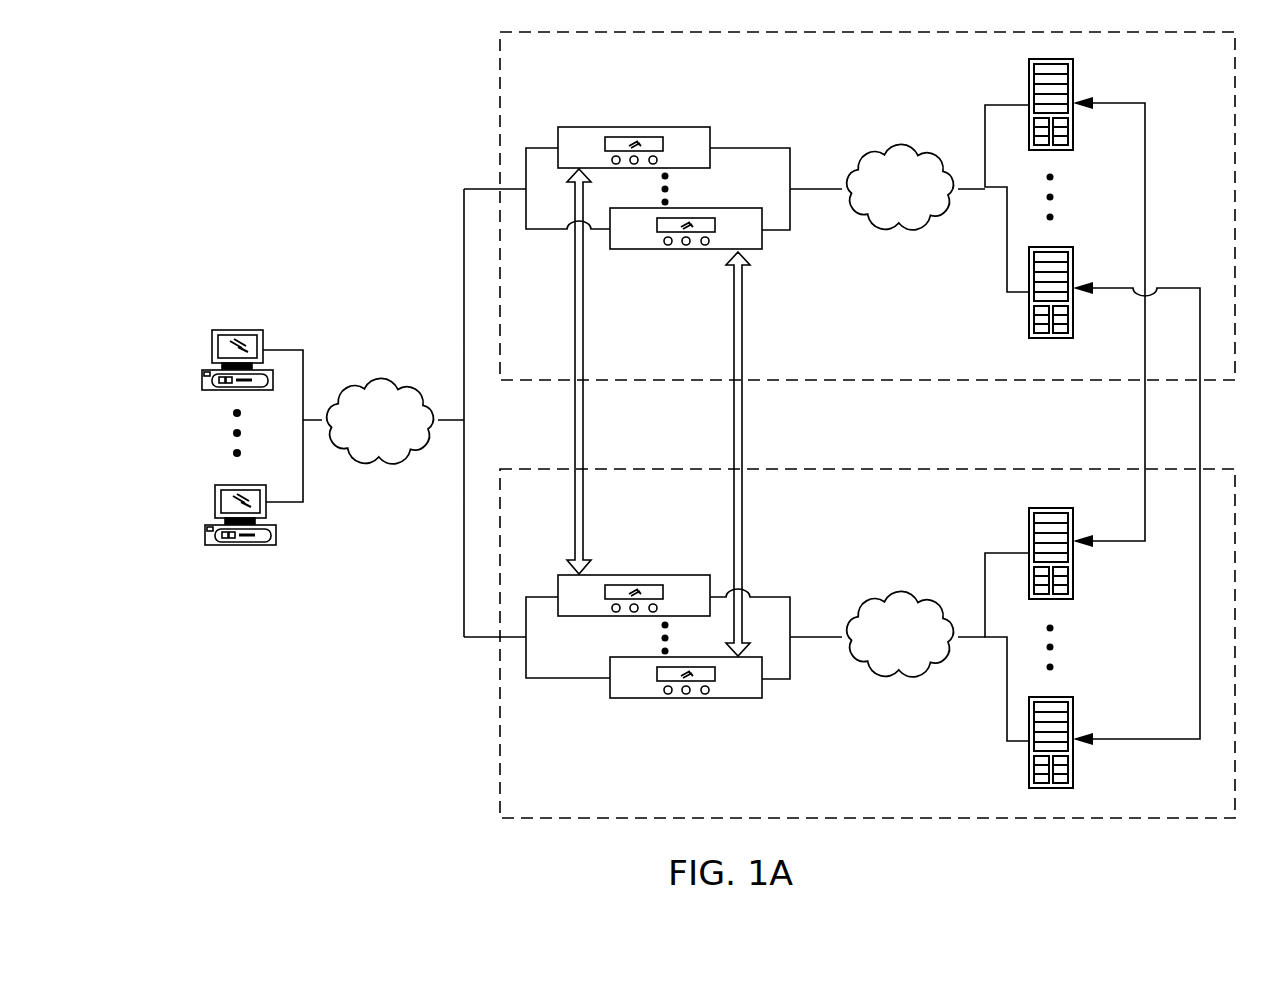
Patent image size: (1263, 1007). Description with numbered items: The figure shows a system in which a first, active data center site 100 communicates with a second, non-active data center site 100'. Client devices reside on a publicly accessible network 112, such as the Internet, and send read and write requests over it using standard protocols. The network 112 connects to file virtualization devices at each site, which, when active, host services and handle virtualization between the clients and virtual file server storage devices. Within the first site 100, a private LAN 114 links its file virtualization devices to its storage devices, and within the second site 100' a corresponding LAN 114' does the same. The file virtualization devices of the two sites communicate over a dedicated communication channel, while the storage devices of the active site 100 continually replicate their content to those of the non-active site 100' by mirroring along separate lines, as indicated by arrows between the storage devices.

The first data center site 100 is at (840, 206).
The second data center site 100' is at (837, 643).
The network 112 is at (393, 440).
The LAN 114 is at (900, 186).
The LAN 114' is at (900, 633).